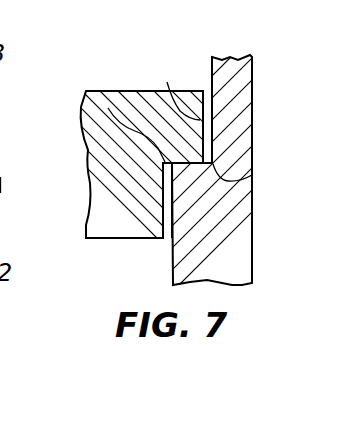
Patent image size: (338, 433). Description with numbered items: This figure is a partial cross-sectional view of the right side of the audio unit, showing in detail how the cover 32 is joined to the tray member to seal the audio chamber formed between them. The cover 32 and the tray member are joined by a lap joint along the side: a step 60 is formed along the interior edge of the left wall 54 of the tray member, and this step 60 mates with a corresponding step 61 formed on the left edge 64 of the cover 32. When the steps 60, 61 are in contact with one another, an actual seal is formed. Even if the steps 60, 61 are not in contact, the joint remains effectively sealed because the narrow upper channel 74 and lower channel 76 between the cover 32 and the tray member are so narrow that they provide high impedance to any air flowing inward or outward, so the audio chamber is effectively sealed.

The cover 32 is at (103, 155).
The step 61 is at (108, 108).
The left edge 64 is at (167, 82).
The upper channel 74 is at (208, 100).
The left wall 54 is at (247, 264).
The step 60 is at (252, 175).
The lower channel 76 is at (165, 228).